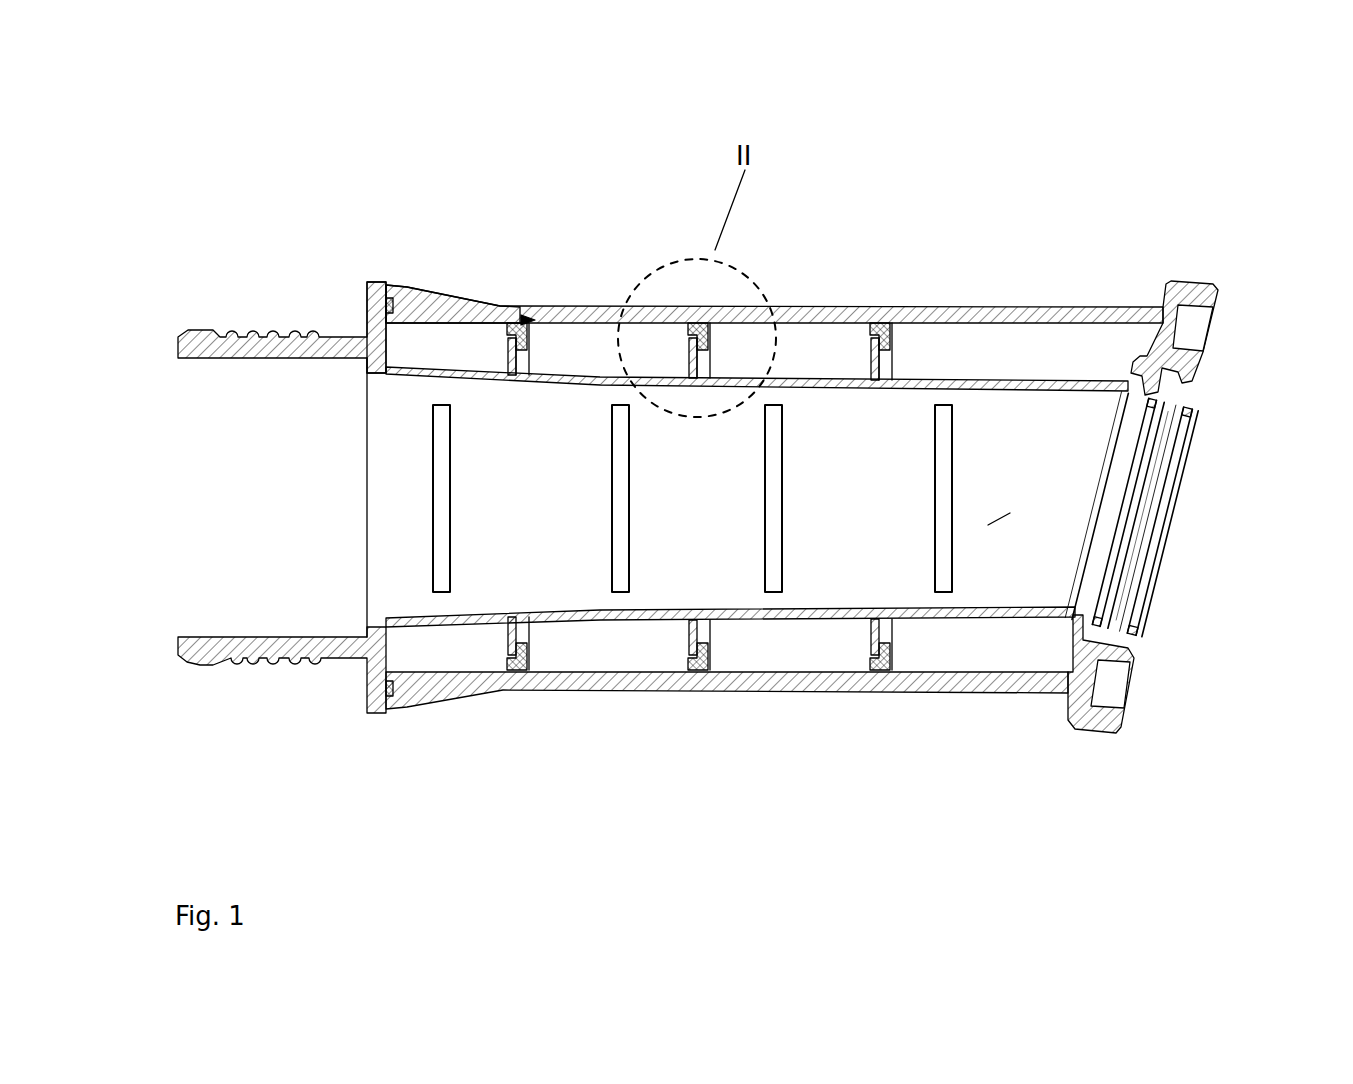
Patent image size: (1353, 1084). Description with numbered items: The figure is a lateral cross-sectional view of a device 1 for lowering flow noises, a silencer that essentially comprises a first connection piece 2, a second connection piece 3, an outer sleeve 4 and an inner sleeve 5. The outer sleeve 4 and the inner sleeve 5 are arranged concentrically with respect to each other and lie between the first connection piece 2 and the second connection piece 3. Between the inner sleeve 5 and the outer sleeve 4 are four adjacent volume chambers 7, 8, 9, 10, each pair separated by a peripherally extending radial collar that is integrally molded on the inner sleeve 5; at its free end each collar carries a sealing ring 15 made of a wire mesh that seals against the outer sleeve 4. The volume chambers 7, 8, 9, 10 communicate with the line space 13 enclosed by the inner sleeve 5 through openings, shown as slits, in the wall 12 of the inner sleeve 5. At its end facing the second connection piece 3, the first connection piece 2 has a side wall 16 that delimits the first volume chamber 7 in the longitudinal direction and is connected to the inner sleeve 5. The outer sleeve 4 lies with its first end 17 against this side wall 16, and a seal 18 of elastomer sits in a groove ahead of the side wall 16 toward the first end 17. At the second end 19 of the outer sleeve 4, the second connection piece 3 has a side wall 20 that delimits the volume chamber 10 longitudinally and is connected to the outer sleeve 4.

The device for lowering flow noises 1 is at (265, 171).
The first connection piece 2 is at (247, 647).
The second connection piece 3 is at (1083, 718).
The outer sleeve 4 is at (740, 685).
The inner sleeve 5 is at (974, 382).
The first volume chamber 7 is at (435, 650).
The volume chamber 8 is at (600, 650).
The volume chamber 9 is at (795, 648).
The volume chamber 10 is at (970, 650).
The wall of the inner sleeve 12 is at (988, 525).
The line space 13 is at (1020, 487).
The sealing ring 15 is at (531, 316).
The side wall 16 is at (373, 293).
The first end 17 is at (398, 292).
The seal 18 is at (378, 283).
The second end 19 is at (1068, 317).
The side wall 20 is at (1170, 313).